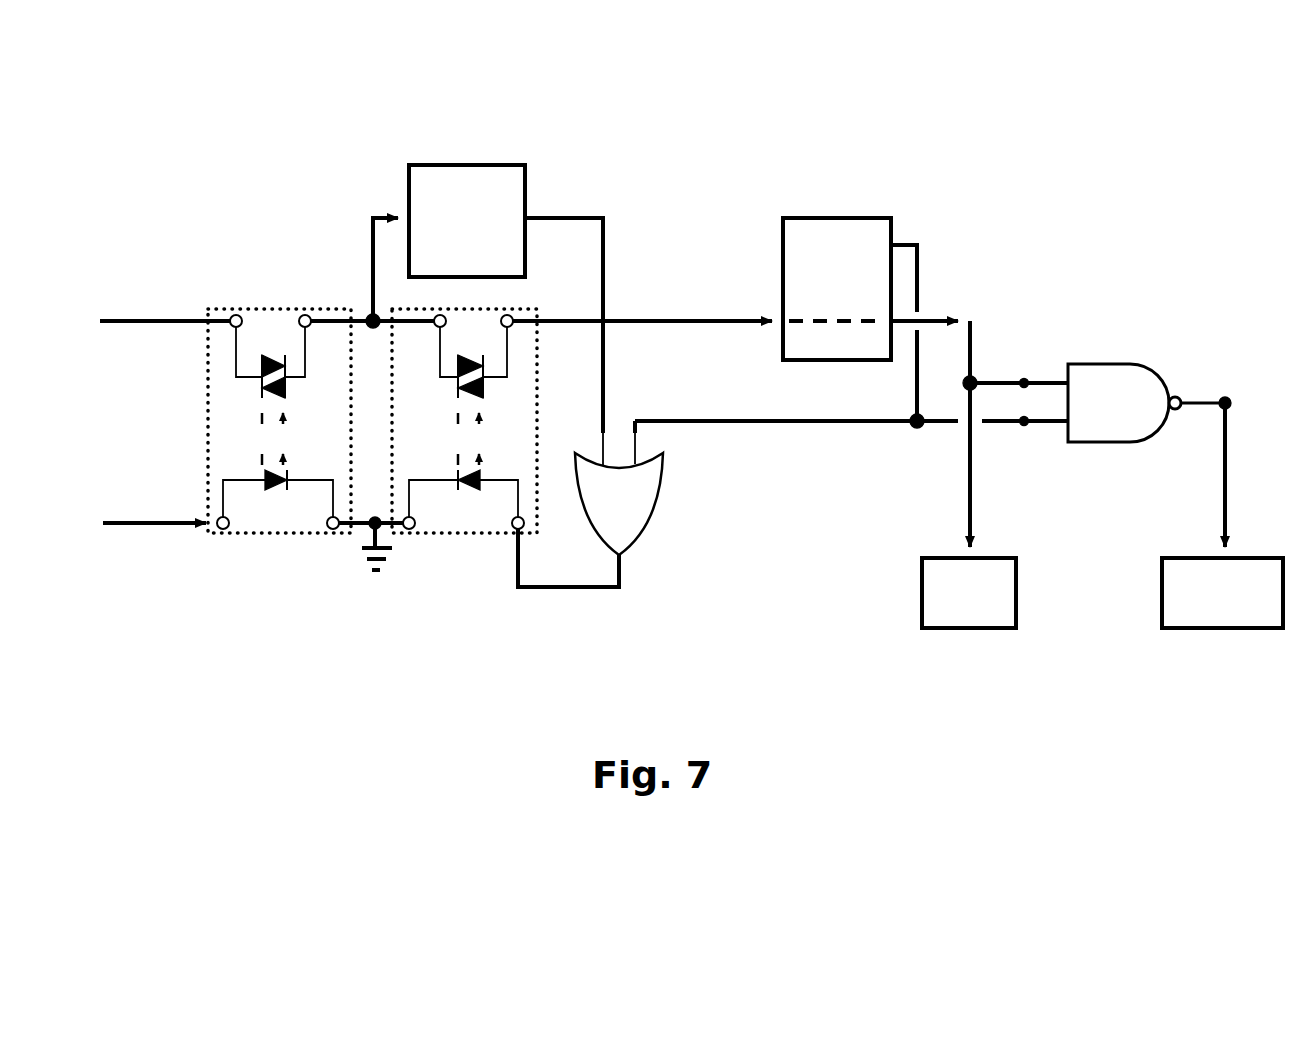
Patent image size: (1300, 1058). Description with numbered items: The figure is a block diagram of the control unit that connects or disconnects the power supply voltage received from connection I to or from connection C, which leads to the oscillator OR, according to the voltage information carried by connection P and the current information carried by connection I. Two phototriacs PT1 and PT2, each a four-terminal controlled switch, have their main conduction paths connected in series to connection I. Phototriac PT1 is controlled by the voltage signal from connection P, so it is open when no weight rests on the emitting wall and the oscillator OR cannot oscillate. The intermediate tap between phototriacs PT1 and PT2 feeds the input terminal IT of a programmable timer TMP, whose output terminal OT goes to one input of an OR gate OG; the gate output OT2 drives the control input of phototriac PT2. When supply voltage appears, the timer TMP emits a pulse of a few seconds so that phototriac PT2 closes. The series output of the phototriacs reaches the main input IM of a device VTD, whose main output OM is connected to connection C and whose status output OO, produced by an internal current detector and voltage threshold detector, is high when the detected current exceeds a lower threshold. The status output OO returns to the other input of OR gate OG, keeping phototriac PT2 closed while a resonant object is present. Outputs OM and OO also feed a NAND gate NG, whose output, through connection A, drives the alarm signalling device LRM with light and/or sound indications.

The connection I is at (416, 319).
The connection P is at (228, 537).
The first phototriac PT1 is at (279, 458).
The second phototriac PT2 is at (464, 458).
The programmable timer TMP is at (467, 221).
The input terminal of the timer IT is at (362, 273).
The output terminal of the timer OT is at (592, 342).
The OR gate OG is at (619, 494).
The output of the OR gate OT2 is at (604, 574).
The main input of device VTD IM is at (744, 293).
The voltage threshold detector device VTD is at (837, 289).
The status output OO is at (851, 313).
The main output OM is at (936, 327).
The NAND gate NG is at (1124, 403).
The connection C is at (1015, 461).
The connection A is at (1225, 472).
The oscillator OR is at (969, 593).
The alarm signalling device LRM is at (1222, 593).